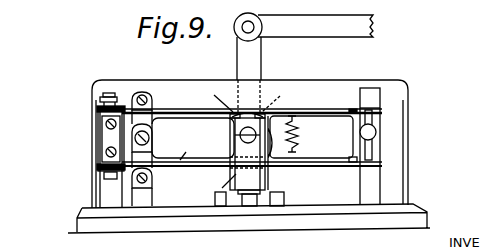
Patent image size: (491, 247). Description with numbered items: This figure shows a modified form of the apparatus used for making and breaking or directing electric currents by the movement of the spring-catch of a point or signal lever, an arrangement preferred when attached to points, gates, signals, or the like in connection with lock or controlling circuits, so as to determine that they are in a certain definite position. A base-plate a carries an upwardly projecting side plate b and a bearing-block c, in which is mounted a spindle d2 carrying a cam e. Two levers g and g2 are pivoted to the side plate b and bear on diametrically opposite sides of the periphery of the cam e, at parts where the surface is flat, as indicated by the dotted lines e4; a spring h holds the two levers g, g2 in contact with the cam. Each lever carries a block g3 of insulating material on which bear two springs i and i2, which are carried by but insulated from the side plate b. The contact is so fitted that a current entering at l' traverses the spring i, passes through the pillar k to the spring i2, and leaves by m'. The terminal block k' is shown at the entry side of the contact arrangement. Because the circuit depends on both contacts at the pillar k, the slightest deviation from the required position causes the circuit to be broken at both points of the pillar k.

The base-plate a is at (249, 218).
The side plate b is at (250, 144).
The bearing-block c is at (251, 159).
The cam e is at (218, 98).
The flat parts of cam surface e4 is at (252, 146).
The lever g is at (193, 138).
The lever g2 is at (193, 149).
The block of insulating material g3 is at (352, 157).
The spindle d2 is at (232, 128).
The spring h is at (299, 134).
The spring i is at (324, 108).
The spring i2 is at (252, 174).
The pillar k is at (377, 146).
The terminal block k' is at (111, 150).
The current entry terminal l' is at (76, 109).
The current exit terminal m' is at (75, 165).